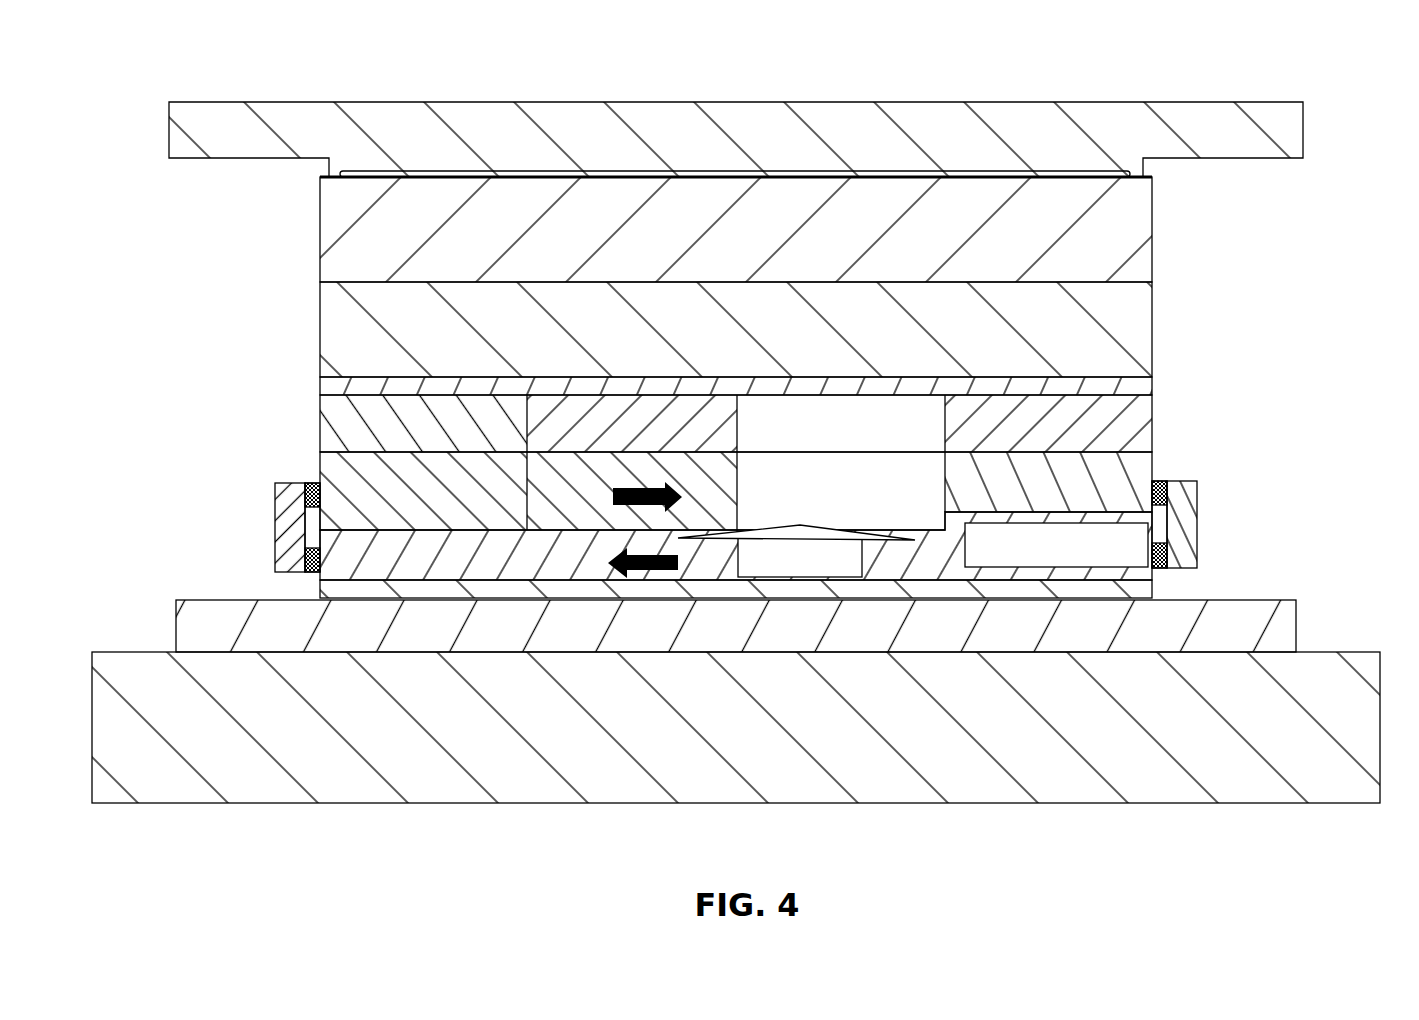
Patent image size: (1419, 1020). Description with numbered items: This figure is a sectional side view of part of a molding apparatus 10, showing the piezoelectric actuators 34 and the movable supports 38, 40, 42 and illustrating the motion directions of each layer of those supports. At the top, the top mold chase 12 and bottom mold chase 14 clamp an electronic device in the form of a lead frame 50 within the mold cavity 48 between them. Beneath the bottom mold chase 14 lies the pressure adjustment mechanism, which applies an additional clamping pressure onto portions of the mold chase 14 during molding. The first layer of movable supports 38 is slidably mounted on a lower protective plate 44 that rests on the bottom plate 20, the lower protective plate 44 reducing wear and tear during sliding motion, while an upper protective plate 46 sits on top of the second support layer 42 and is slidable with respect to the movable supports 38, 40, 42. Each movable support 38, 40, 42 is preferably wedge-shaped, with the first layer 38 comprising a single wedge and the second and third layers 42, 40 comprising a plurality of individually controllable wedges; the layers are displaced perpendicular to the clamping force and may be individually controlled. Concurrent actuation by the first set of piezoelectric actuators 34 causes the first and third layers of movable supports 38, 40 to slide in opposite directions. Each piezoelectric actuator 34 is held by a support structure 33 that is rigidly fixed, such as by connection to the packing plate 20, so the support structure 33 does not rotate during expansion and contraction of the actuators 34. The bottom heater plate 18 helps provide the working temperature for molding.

The molding apparatus 10 is at (1168, 67).
The top mold chase 12 is at (208, 150).
The bottom mold chase 14 is at (320, 240).
The bottom heater plate 18 is at (1295, 672).
The bottom plate 20 is at (1287, 613).
The support structure 33 is at (281, 527).
The piezoelectric actuators 34 is at (312, 481).
The first layer of movable supports 38 is at (346, 577).
The third layer of movable supports 40 is at (1155, 468).
The second layer of movable supports 42 is at (1155, 418).
The lower protective plate 44 is at (1155, 587).
The upper protective plate 46 is at (1155, 383).
The mold cavity 48 is at (1080, 174).
The lead frame 50 is at (316, 180).